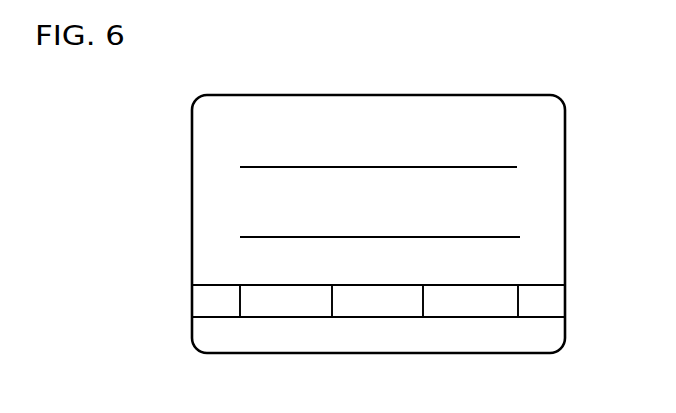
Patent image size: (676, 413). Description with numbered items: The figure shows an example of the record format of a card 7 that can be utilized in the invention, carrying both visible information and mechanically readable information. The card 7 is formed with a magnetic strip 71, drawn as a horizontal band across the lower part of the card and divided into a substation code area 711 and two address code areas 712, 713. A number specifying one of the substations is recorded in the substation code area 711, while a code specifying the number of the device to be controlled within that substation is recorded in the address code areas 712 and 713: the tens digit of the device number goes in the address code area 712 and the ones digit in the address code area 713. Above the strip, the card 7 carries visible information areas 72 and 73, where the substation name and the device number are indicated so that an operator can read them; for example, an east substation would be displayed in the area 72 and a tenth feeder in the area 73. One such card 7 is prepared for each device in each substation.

The card 7 is at (195, 180).
The magnetic strip 71 is at (196, 302).
The substation code area 711 is at (326, 320).
The address code area 712 is at (413, 311).
The address code area 713 is at (508, 311).
The visible information area 72 is at (478, 153).
The visible information area 73 is at (481, 223).